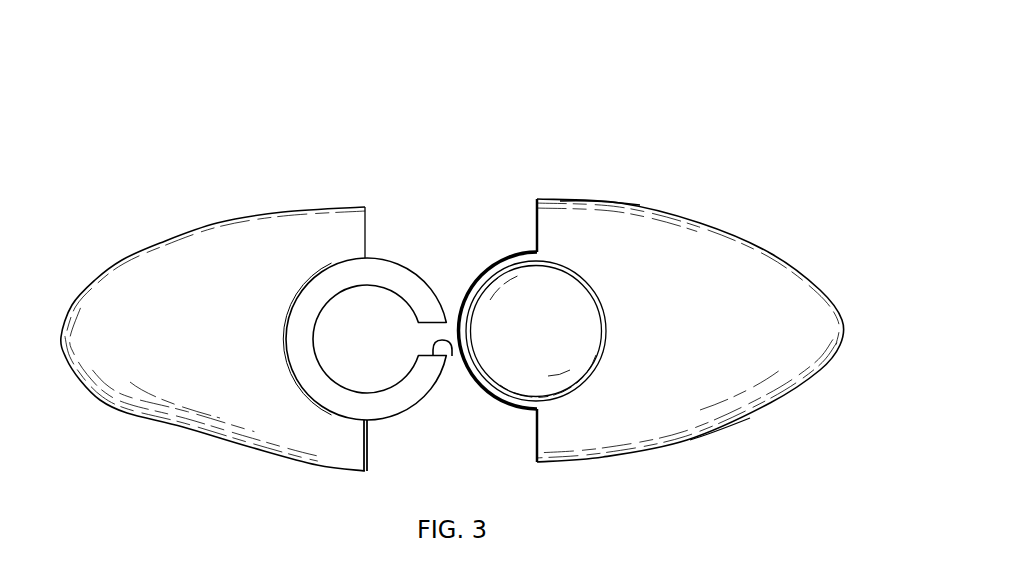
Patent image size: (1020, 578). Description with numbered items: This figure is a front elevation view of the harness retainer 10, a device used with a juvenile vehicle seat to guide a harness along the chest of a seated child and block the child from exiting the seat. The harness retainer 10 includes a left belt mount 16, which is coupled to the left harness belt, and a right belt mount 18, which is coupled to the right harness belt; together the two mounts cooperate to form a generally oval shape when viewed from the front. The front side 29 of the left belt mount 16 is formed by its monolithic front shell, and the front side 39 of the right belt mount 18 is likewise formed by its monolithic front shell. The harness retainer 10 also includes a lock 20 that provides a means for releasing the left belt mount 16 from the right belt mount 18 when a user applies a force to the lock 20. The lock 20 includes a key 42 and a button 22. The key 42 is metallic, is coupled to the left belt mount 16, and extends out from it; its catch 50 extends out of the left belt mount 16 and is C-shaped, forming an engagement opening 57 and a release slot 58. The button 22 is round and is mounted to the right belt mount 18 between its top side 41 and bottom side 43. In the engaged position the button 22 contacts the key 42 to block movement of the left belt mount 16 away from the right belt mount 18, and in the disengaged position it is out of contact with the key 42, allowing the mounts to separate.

The harness retainer 10 is at (773, 100).
The left belt mount 16 is at (128, 238).
The right belt mount 18 is at (738, 216).
The lock 20 is at (397, 230).
The button 22 is at (560, 338).
The front side 29 is at (197, 350).
The front side 39 is at (673, 343).
The top side 41 is at (630, 201).
The bottom side 43 is at (727, 437).
The key 42 is at (377, 424).
The catch 50 is at (398, 412).
The engagement opening 57 is at (392, 382).
The release slot 58 is at (452, 356).